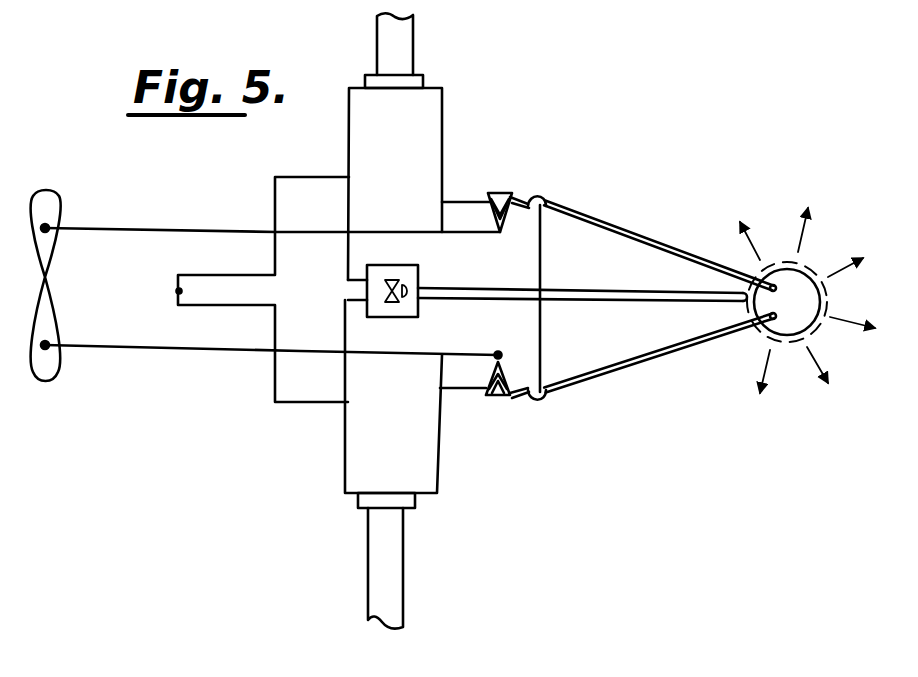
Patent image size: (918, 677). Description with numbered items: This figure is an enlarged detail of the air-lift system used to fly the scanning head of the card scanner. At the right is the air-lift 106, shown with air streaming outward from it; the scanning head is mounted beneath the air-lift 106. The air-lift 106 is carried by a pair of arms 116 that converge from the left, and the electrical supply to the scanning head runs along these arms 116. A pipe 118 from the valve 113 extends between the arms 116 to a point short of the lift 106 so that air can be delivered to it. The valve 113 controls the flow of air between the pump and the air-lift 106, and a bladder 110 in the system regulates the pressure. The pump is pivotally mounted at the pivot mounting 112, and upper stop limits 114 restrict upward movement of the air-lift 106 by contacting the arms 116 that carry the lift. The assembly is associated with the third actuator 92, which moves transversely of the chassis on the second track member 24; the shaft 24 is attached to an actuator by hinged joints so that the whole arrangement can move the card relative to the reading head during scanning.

The second track member 24 is at (390, 545).
The third actuator 92 is at (418, 456).
The air-lift 106 is at (787, 328).
The bladder 110 is at (302, 392).
The pivot mounting 112 is at (500, 200).
The valve 113 is at (394, 299).
The upper stop limits 114 is at (548, 196).
The arms 116 is at (637, 240).
The pipe 118 is at (575, 297).